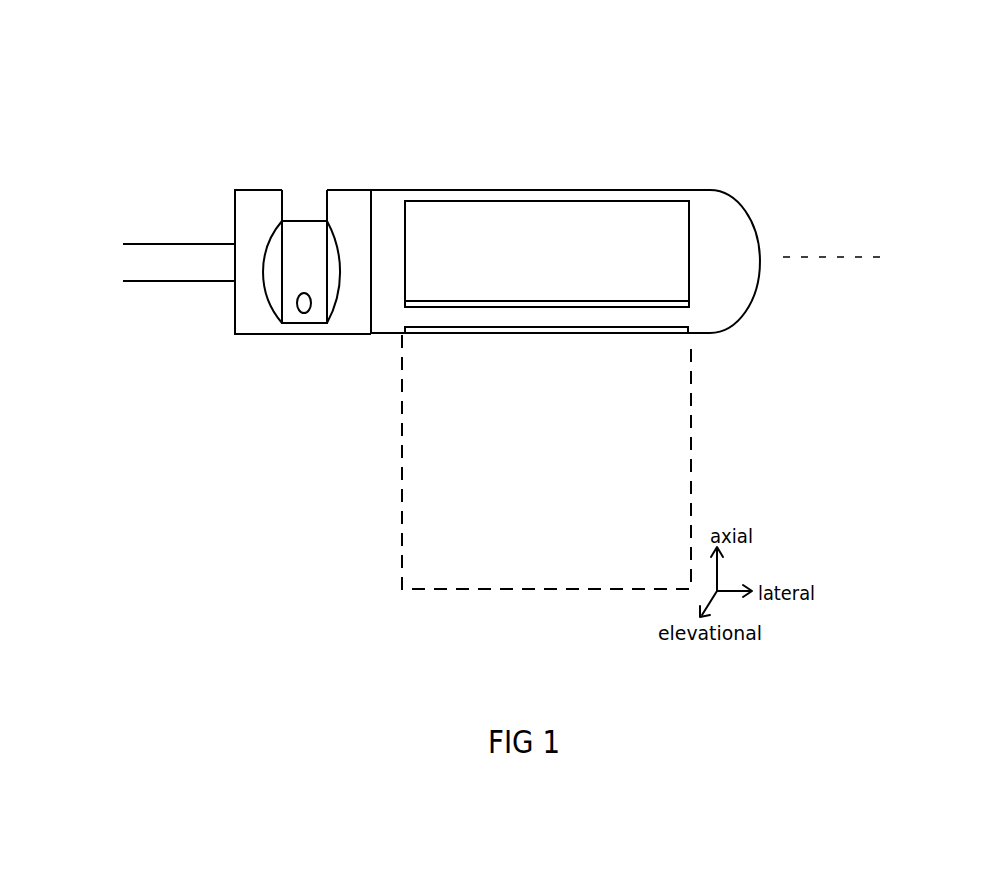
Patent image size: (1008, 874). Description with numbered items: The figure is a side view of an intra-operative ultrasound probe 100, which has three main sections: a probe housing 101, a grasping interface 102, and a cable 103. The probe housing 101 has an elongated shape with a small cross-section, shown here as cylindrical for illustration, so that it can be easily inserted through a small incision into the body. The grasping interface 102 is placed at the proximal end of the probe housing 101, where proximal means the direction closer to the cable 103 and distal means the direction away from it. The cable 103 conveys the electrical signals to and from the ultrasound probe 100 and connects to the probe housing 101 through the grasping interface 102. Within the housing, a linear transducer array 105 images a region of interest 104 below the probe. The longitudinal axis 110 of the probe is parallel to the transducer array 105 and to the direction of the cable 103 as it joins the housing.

The intra-operative ultrasound probe 100 is at (201, 107).
The probe housing 101 is at (572, 190).
The grasping interface 102 is at (345, 190).
The cable 103 is at (176, 243).
The region of interest 104 is at (546, 462).
The transducer array 105 is at (675, 334).
The longitudinal axis 110 is at (834, 239).